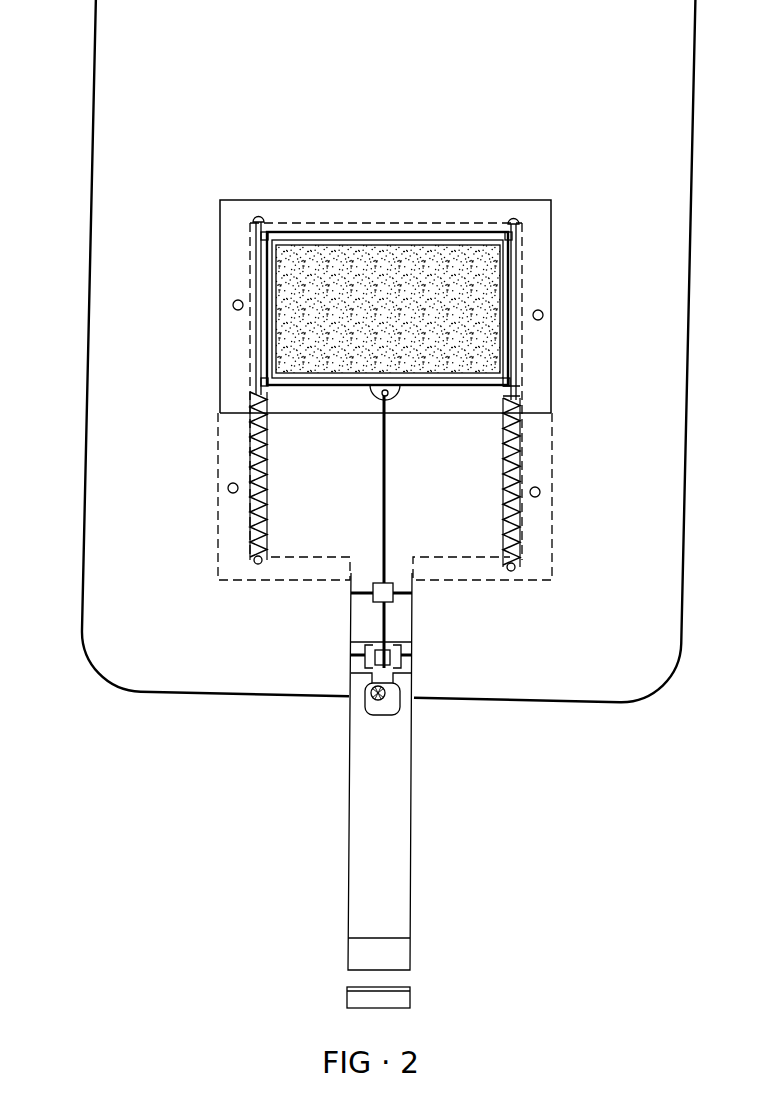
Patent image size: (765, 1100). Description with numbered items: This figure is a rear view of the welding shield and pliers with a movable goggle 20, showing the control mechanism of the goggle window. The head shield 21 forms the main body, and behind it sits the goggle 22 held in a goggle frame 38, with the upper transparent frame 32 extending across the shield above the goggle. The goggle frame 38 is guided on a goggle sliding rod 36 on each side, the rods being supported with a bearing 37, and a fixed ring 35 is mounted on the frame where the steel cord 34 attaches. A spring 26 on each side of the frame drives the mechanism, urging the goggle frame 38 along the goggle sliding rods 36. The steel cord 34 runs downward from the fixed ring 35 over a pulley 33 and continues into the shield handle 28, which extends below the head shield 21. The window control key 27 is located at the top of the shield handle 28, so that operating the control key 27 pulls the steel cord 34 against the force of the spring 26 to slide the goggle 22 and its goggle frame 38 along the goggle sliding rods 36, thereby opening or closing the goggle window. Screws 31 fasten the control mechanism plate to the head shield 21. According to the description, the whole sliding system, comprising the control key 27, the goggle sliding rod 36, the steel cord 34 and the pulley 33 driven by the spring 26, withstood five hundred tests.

The welding shield and pliers with a movable goggle 20 is at (80, 204).
The head shield 21 is at (167, 678).
The goggle 22 is at (495, 278).
The spring 26 is at (250, 527).
The window control key 27 is at (373, 690).
The shield handle 28 is at (363, 822).
The screws 31 is at (234, 307).
The upper transparent frame 32 is at (232, 405).
The pulley 33 is at (373, 593).
The steel cord 34 is at (397, 585).
The fixed ring 35 is at (390, 402).
The goggle sliding rod 36 is at (513, 437).
The bearing 37 is at (517, 236).
The goggle frame 38 is at (514, 403).